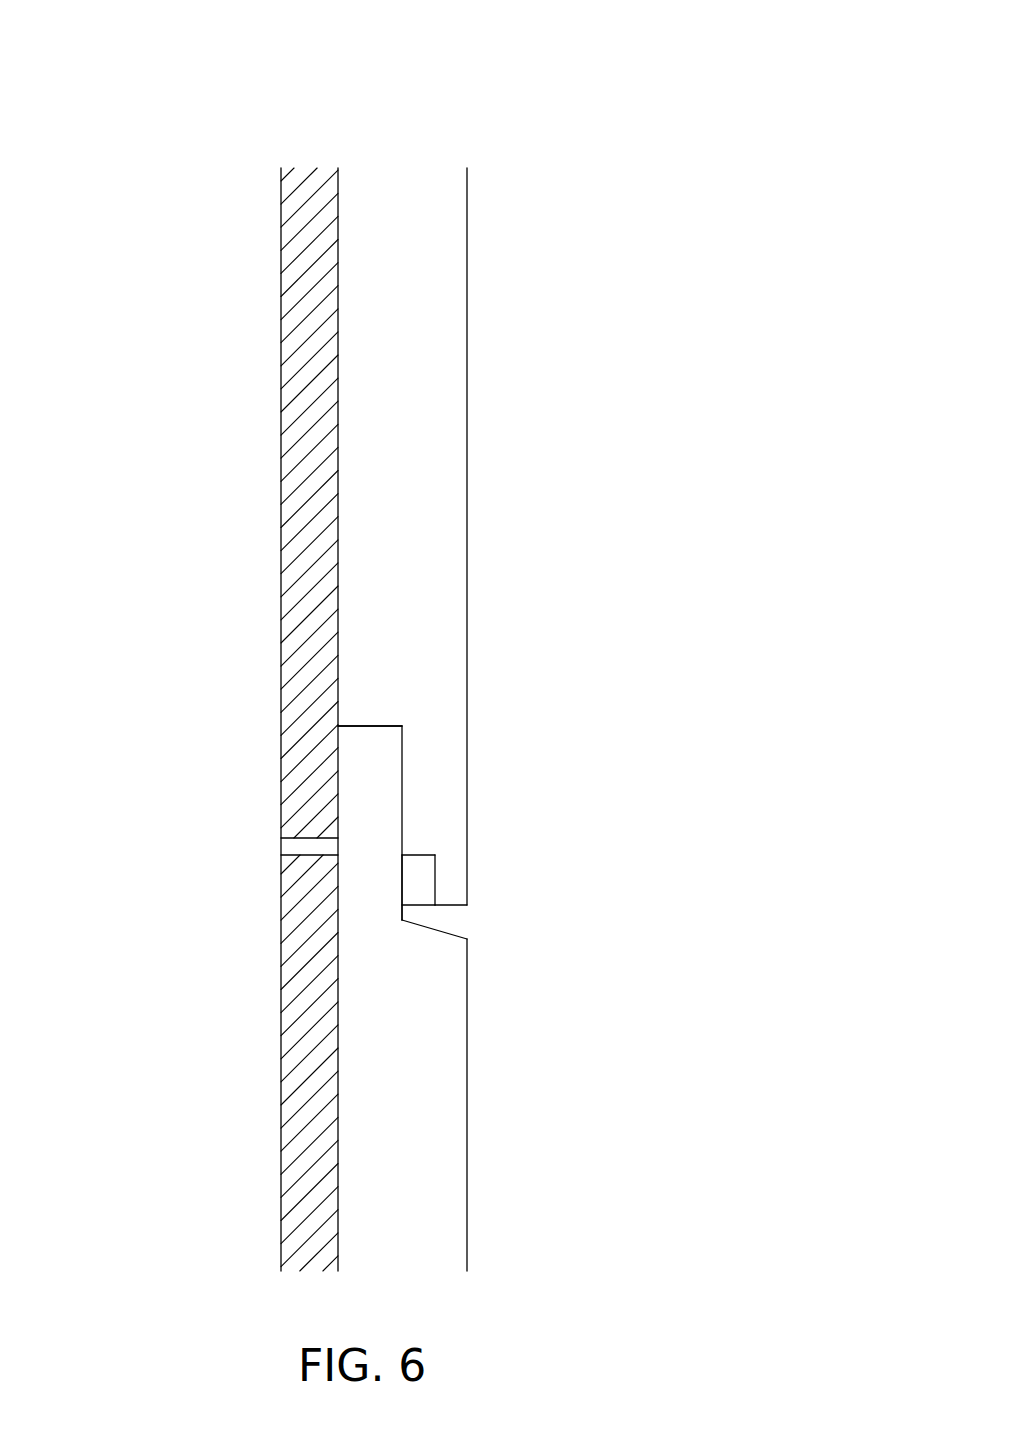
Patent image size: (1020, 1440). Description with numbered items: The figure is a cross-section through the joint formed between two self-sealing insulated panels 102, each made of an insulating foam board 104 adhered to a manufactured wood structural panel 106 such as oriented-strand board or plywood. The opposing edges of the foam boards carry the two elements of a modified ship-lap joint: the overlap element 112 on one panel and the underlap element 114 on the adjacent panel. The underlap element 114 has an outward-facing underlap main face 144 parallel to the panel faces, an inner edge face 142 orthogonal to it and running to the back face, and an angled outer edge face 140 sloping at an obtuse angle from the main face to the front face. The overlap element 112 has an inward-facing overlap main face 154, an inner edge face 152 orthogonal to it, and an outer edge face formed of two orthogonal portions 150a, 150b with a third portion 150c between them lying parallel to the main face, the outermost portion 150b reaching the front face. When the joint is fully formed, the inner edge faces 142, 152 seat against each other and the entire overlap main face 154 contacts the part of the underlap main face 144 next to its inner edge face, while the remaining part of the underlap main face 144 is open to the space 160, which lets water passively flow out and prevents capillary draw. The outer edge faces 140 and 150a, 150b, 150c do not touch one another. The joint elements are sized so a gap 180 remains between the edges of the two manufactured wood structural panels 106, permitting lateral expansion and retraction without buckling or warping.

The self-sealing insulated panel 102 is at (439, 640).
The insulating foam board 104 is at (437, 310).
The manufactured wood structural panel 106 is at (283, 306).
The overlap element 112 is at (707, 771).
The underlap element 114 is at (605, 1042).
The angled outer edge face 140 is at (437, 932).
The inner edge face 142 is at (365, 727).
The underlap main face 144 is at (405, 877).
The outer edge face portion 150a is at (420, 855).
The outermost outer edge face portion 150b is at (450, 907).
The third portion of outer edge face 150c is at (435, 877).
The inner edge face 152 is at (375, 726).
The overlap main face 154 is at (402, 772).
The open spacing 160 is at (418, 887).
The gap 180 is at (278, 848).